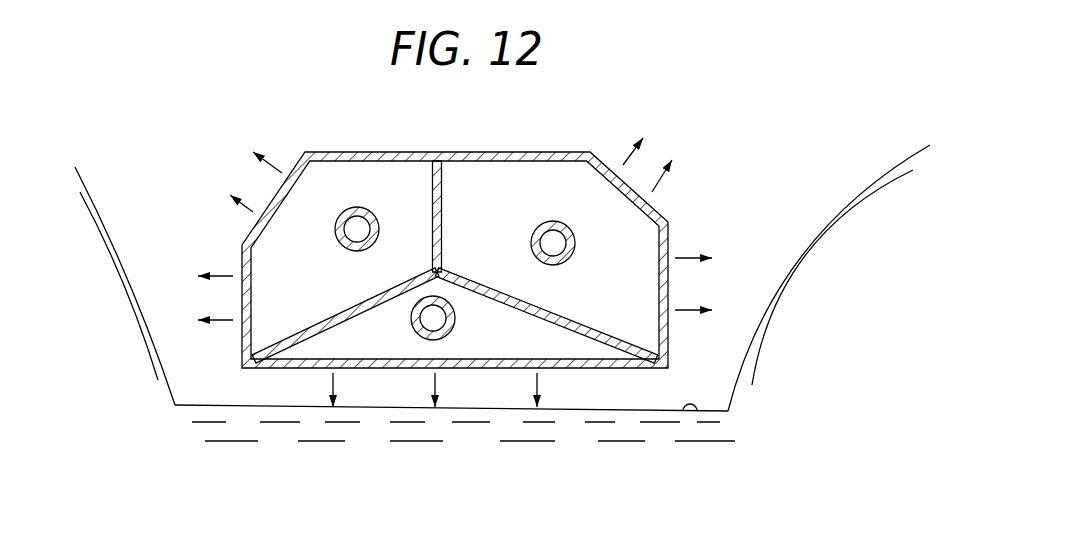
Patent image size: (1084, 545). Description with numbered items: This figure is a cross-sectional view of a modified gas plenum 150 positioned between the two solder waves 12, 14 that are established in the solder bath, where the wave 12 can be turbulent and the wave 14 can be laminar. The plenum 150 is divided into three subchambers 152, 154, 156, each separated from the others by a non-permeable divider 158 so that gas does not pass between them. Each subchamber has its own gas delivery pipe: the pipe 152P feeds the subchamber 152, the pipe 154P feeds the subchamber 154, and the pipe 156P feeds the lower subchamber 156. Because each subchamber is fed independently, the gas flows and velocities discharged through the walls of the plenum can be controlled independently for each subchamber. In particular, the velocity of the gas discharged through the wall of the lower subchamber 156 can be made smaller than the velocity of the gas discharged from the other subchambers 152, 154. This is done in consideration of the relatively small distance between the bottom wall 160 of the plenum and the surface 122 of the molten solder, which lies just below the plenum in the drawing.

The solder wave 12 is at (115, 213).
The solder wave 14 is at (845, 205).
The surface of the molten solder 122 is at (697, 412).
The gas plenum 150 is at (510, 150).
The subchamber 152 is at (405, 185).
The gas delivery pipe 152P is at (352, 208).
The subchamber 154 is at (640, 237).
The gas delivery pipe 154P is at (566, 226).
The lower subchamber 156 is at (375, 340).
The gas delivery pipe 156P is at (449, 334).
The non-permeable divider 158 is at (447, 233).
The bottom wall 160 is at (600, 370).